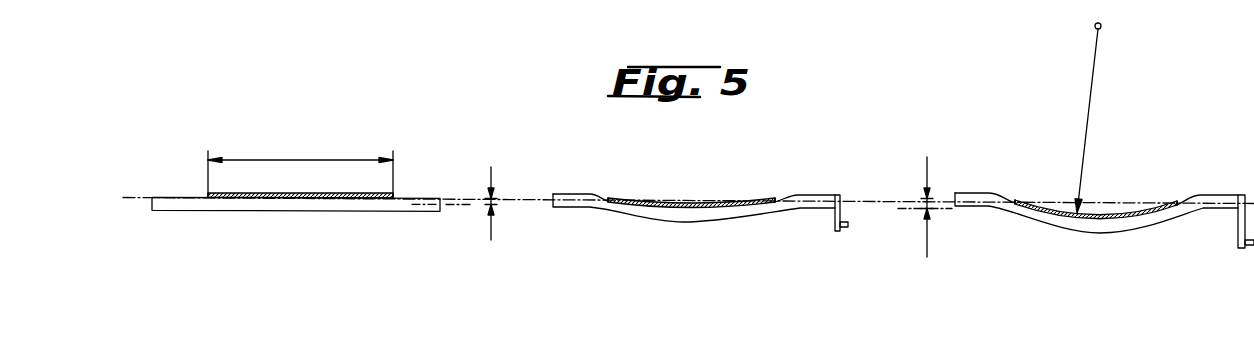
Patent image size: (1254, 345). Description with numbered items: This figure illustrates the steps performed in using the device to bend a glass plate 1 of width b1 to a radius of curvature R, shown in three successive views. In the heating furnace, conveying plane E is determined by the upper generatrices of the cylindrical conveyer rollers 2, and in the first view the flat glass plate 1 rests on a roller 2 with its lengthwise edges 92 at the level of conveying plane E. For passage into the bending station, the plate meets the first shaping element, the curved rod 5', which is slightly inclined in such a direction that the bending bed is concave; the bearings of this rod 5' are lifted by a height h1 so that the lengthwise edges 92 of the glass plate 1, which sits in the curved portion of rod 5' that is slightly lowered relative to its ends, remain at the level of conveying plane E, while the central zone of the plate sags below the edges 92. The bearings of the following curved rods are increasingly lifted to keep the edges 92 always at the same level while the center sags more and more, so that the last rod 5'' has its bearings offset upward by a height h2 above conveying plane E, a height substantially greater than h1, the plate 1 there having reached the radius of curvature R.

The glass plate 1 is at (327, 194).
The cylindrical conveyer roller 2 is at (183, 204).
The curved rod (first shaping element) 5' is at (700, 233).
The last curved rod 5'' is at (1104, 235).
The lengthwise edges 92 is at (208, 195).
The conveying plane E is at (142, 182).
The width b1 is at (288, 160).
The height h1 is at (493, 203).
The height h2 is at (933, 208).
The radius of curvature R is at (1092, 118).